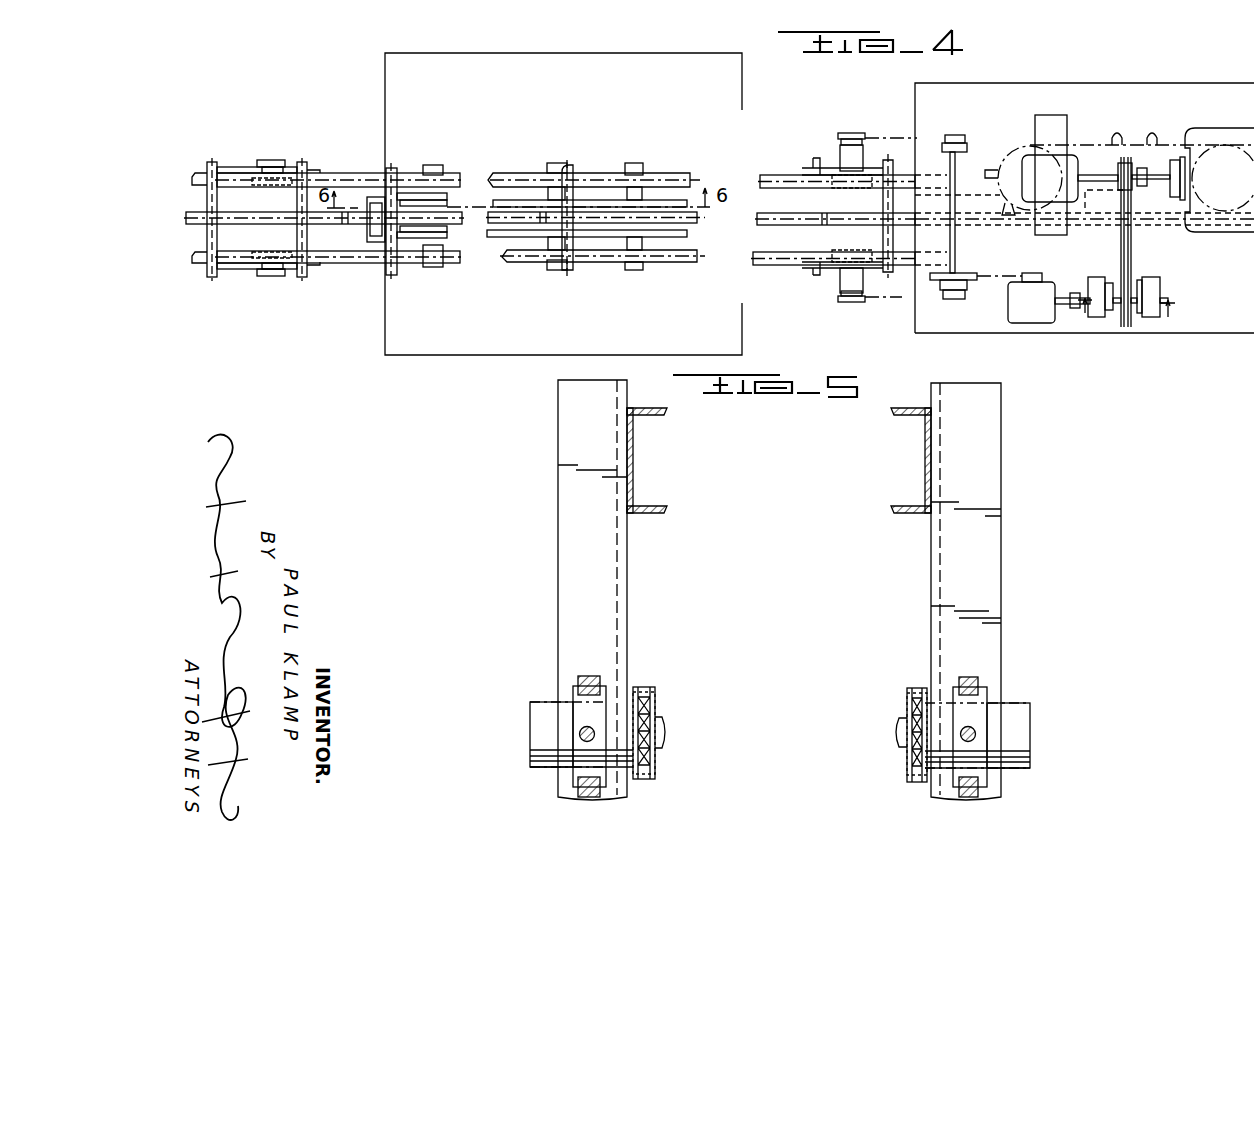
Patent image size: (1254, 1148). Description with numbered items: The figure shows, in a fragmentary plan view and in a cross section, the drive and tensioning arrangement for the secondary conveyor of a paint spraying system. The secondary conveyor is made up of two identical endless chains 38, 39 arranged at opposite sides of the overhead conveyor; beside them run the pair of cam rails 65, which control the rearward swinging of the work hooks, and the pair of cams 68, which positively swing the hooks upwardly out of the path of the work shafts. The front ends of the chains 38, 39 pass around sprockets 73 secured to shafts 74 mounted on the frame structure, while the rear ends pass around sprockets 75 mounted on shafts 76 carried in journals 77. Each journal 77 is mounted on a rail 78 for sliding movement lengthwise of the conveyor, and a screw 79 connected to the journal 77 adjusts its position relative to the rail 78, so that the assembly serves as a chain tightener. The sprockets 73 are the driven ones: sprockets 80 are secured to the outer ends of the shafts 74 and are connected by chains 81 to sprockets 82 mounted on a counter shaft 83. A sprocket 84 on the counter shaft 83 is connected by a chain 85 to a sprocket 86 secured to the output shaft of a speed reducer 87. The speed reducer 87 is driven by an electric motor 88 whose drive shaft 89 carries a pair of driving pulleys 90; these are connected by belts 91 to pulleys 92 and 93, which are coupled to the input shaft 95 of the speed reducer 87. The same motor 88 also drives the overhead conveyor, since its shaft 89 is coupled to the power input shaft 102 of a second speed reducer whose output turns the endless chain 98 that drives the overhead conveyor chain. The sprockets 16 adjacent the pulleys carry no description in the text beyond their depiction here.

In FIG. 4, the conveyor sprocket 16 is at (1133, 312).
In FIG. 4, the endless chain 38 is at (329, 263).
In FIG. 5, the endless chain 38 is at (645, 687).
In FIG. 4, the endless chain 39 is at (345, 175).
In FIG. 5, the endless chain 39 is at (914, 688).
In FIG. 4, the cam rail 65 is at (404, 198).
In FIG. 4, the cam 68 is at (525, 200).
In FIG. 4, the sprocket 73 is at (845, 188).
In FIG. 4, the shaft 74 is at (853, 134).
In FIG. 4, the sprocket 75 is at (262, 186).
In FIG. 5, the sprocket 75 is at (655, 702).
In FIG. 5, the shaft 76 is at (666, 733).
In FIG. 4, the journal 77 is at (279, 162).
In FIG. 5, the journal 77 is at (540, 735).
In FIG. 4, the rail 78 is at (245, 167).
In FIG. 5, the rail 78 is at (588, 676).
In FIG. 5, the screw 79 is at (583, 731).
In FIG. 4, the sprocket 80 is at (840, 136).
In FIG. 4, the chain 81 is at (898, 137).
In FIG. 4, the sprocket 82 is at (957, 135).
In FIG. 4, the counter shaft 83 is at (955, 190).
In FIG. 4, the sprocket 84 is at (965, 273).
In FIG. 4, the chain 85 is at (1003, 275).
In FIG. 4, the sprocket 86 is at (1040, 272).
In FIG. 4, the speed reducer 87 is at (1048, 292).
In FIG. 4, the electric motor 88 is at (1027, 165).
In FIG. 4, the drive shaft 89 is at (1092, 177).
In FIG. 4, the driving pulley 90 is at (1123, 160).
In FIG. 4, the belt 91 is at (1130, 254).
In FIG. 4, the pulley 92 is at (1132, 327).
In FIG. 4, the pulley 93 is at (1122, 327).
In FIG. 4, the input shaft 95 is at (1062, 305).
In FIG. 4, the endless chain 98 is at (1167, 128).
In FIG. 4, the power input shaft 102 is at (1150, 165).